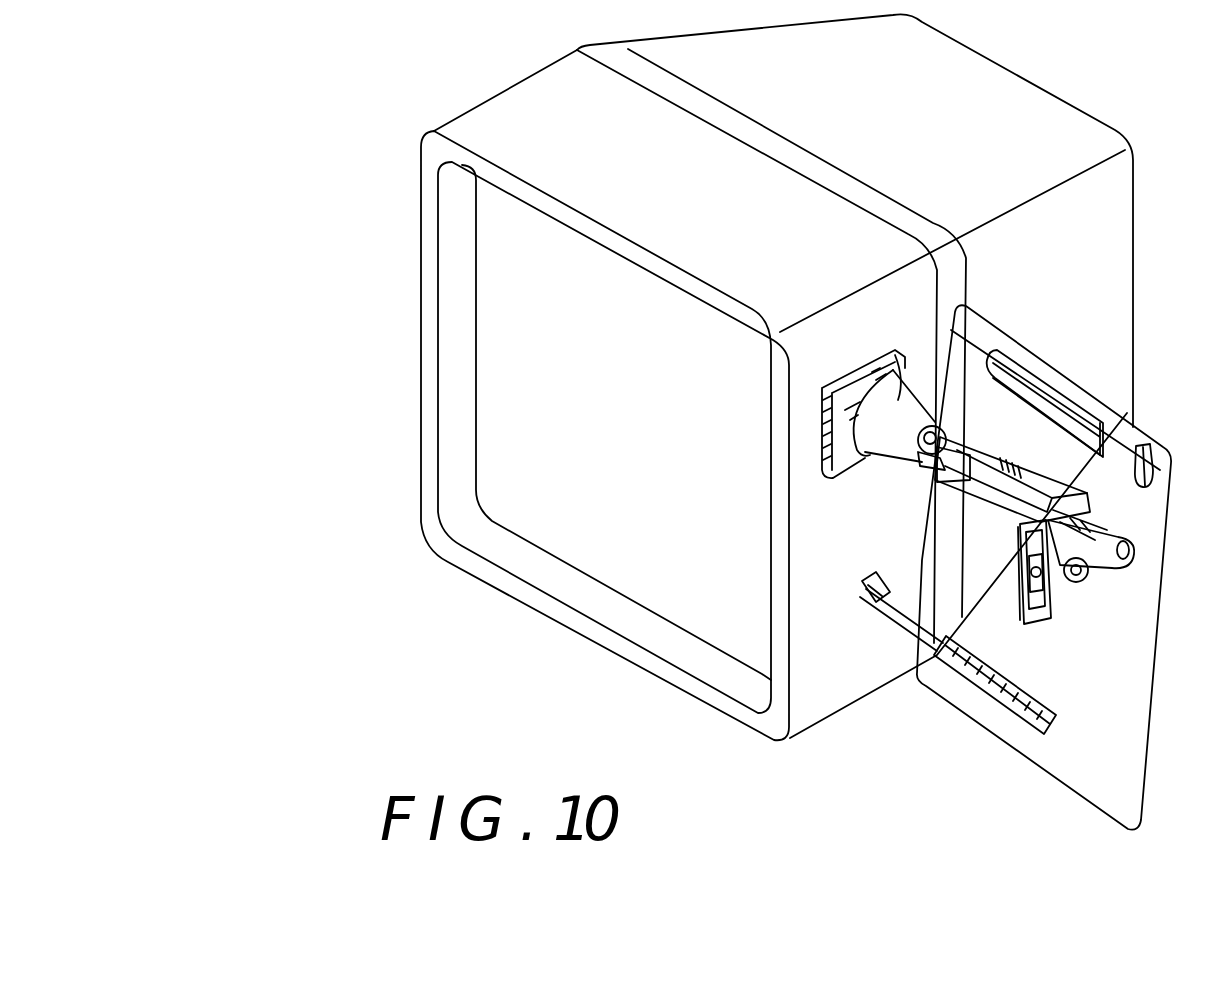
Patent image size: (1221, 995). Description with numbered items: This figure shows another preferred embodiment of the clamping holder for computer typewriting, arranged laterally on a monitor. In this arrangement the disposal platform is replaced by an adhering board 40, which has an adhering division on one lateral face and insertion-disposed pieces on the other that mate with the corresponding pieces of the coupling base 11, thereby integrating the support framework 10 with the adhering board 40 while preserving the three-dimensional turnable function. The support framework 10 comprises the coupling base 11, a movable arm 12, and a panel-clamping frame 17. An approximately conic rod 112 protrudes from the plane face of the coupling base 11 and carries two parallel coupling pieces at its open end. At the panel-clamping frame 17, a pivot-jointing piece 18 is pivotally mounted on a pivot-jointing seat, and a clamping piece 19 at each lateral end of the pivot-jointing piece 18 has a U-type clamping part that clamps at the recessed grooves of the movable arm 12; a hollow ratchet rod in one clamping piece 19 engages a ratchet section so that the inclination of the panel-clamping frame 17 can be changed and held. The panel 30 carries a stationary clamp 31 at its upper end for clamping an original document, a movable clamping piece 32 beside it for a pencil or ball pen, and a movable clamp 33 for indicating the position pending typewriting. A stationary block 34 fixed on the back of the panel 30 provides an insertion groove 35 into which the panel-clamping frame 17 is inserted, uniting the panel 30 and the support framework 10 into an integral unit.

The support framework 10 is at (919, 479).
The coupling base 11 is at (820, 468).
The movable arm 12 is at (990, 458).
The panel-clamping frame 17 is at (1020, 540).
The pivot-jointing piece 18 is at (1062, 583).
The clamping piece 19 is at (1100, 577).
The panel 30 is at (1120, 753).
The stationary clamp 31 is at (1037, 387).
The movable clamping piece 32 is at (1142, 447).
The movable clamp 33 is at (958, 676).
The stationary block 34 is at (1040, 620).
The insertion groove 35 is at (1030, 590).
The adhering board 40 is at (862, 370).
The conic rod 112 is at (896, 360).